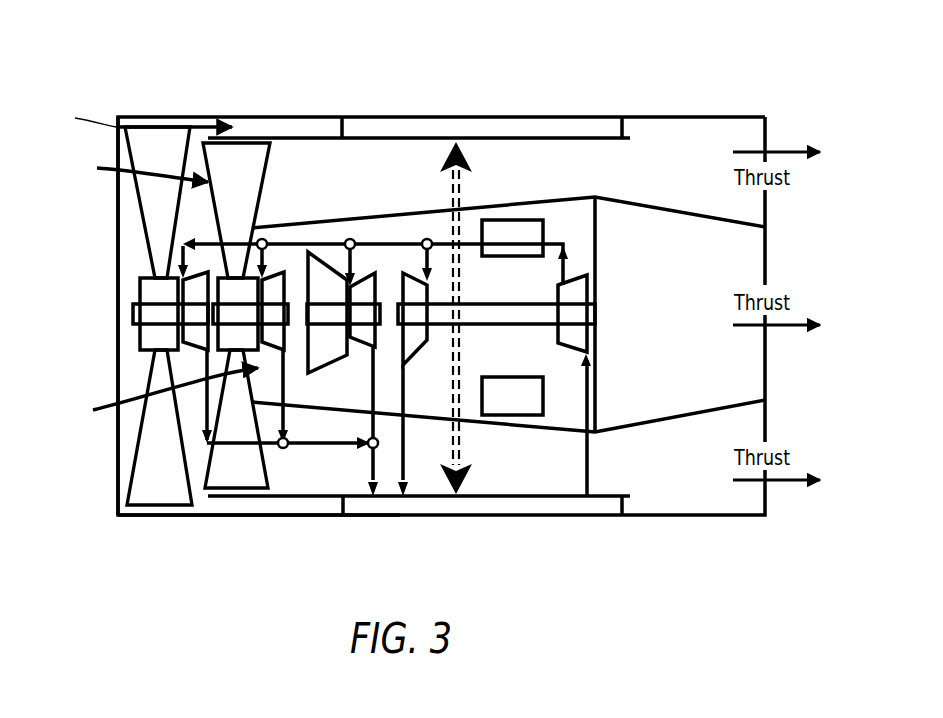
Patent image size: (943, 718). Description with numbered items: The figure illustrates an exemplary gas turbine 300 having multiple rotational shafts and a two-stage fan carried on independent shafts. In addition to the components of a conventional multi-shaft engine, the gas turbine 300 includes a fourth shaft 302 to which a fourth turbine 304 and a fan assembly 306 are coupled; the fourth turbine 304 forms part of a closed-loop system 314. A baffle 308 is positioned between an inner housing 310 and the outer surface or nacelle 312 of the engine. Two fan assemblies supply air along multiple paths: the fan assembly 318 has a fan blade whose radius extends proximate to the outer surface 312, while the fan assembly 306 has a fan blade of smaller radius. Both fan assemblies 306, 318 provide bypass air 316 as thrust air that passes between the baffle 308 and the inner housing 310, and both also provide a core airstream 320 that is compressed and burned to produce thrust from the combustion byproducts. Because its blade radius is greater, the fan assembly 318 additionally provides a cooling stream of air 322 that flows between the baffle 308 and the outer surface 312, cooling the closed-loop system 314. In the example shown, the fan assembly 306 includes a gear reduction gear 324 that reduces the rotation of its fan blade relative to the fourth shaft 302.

The gas turbine 300 is at (739, 73).
The fourth shaft 302 is at (222, 352).
The fourth turbine 304 is at (262, 352).
The fan assembly 306 is at (224, 522).
The baffle 308 is at (277, 141).
The inner housing 310 is at (320, 223).
The outer surface or nacelle 312 is at (162, 117).
The closed-loop system 314 is at (428, 557).
The bypass air 316 is at (133, 167).
The fan assembly 318 is at (91, 470).
The core airstream 320 is at (153, 397).
The cooling stream of air 322 is at (134, 117).
The gear reduction gear 324 is at (228, 356).